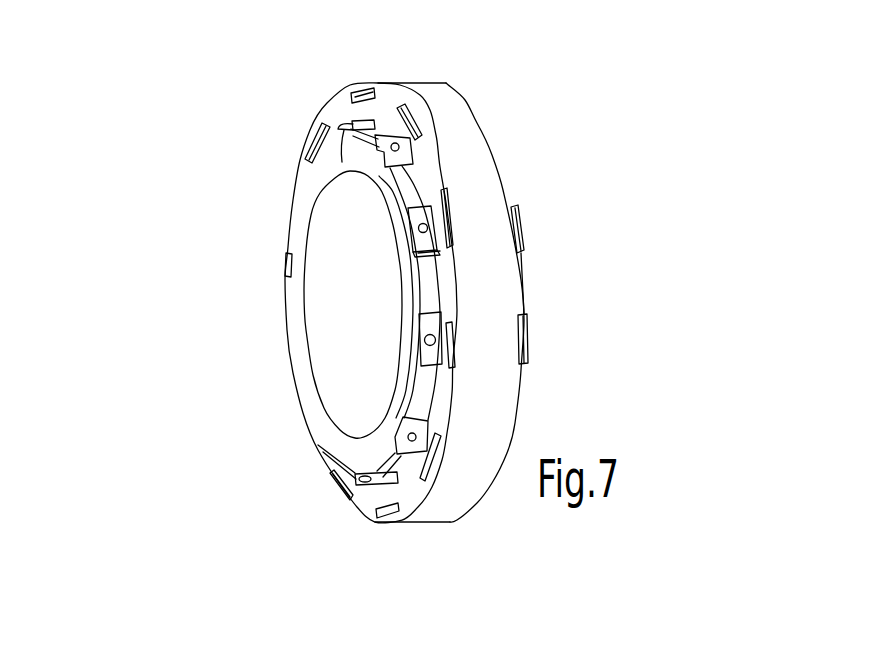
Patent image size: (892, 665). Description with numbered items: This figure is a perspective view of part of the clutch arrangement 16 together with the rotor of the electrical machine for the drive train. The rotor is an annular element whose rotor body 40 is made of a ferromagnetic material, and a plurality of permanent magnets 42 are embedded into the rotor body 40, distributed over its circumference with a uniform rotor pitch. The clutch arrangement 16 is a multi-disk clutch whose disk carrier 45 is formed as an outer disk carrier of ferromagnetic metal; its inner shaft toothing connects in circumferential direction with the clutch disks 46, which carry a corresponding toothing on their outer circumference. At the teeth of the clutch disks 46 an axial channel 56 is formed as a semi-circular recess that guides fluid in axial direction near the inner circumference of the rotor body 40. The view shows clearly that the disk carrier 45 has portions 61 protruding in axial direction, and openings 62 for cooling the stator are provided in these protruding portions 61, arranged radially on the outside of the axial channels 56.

The clutch arrangement 16 is at (630, 150).
The rotor body 40 is at (487, 191).
The permanent magnets 42 is at (360, 91).
The disk carrier 45 is at (525, 307).
The clutch disks 46 is at (297, 313).
The axial channel 56 is at (347, 130).
The protruding portions 61 is at (428, 285).
The openings 62 is at (422, 224).